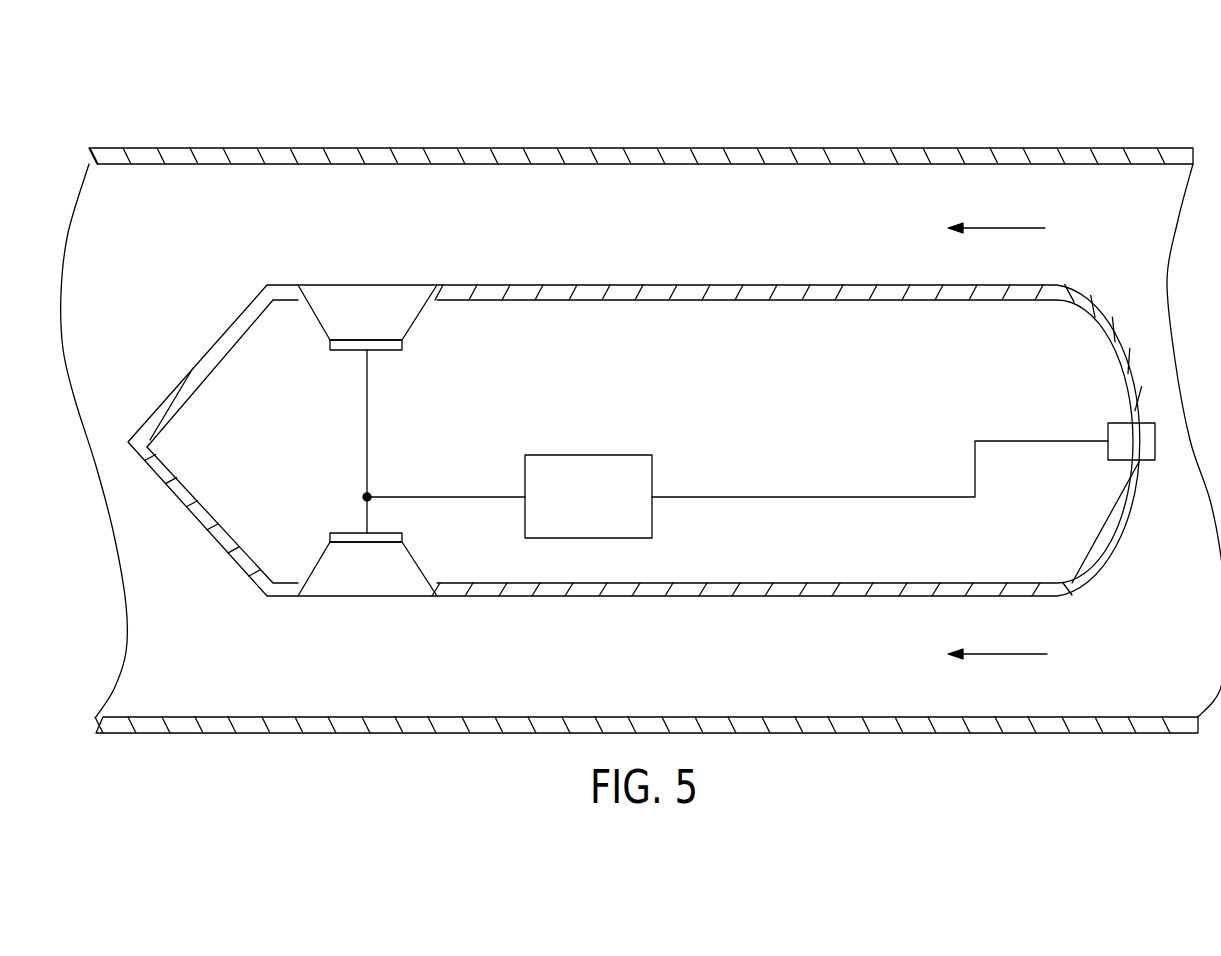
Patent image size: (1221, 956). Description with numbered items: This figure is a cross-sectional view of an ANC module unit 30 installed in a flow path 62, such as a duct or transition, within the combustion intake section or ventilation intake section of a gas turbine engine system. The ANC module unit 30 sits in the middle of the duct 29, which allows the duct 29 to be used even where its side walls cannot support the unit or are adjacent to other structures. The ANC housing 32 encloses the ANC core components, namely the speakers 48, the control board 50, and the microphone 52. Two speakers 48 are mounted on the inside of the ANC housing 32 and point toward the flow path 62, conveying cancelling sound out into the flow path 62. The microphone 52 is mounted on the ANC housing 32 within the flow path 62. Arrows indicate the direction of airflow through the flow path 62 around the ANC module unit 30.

The duct 29 is at (443, 148).
The ANC module unit 30 is at (584, 258).
The ANC housing 32 is at (823, 285).
The speakers 48 is at (310, 313).
The control board 50 is at (588, 455).
The microphone 52 is at (1158, 452).
The flow path 62 is at (1002, 228).